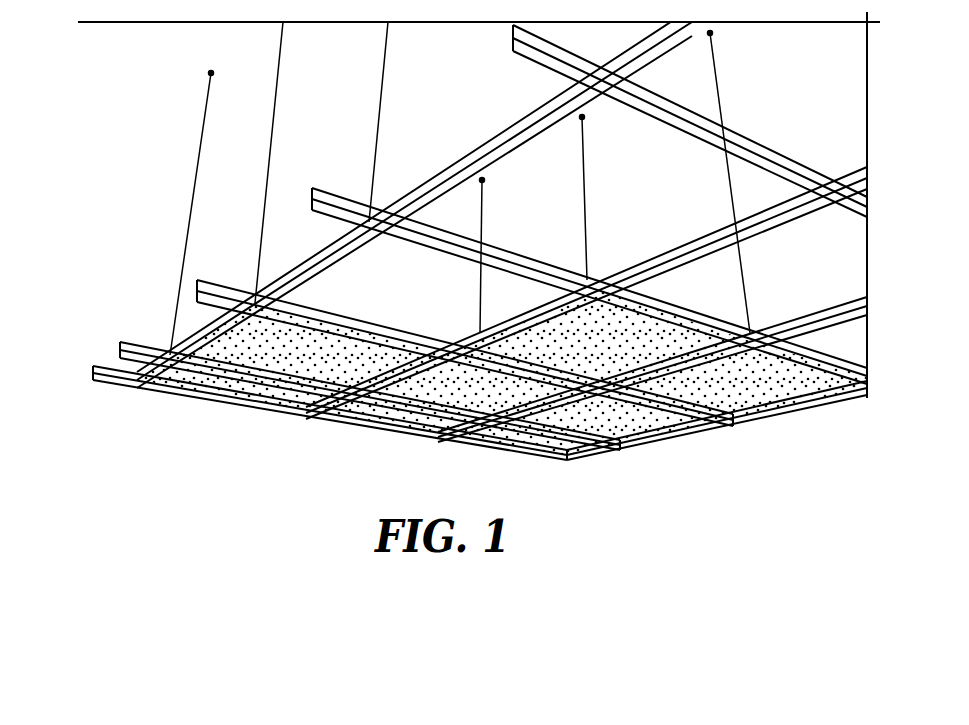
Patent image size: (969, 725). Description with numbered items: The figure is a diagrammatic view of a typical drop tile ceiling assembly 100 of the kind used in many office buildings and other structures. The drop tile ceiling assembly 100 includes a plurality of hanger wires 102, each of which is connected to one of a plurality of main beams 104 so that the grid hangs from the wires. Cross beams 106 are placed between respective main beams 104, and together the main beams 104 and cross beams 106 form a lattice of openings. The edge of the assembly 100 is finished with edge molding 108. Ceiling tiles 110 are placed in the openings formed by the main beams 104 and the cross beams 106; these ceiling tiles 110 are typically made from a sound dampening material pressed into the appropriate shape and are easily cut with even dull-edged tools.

The drop tile ceiling assembly 100 is at (449, 263).
The hanger wires 102 is at (262, 190).
The main beams 104 is at (513, 40).
The cross beams 106 is at (193, 338).
The edge molding 108 is at (107, 373).
The ceiling tiles 110 is at (635, 425).